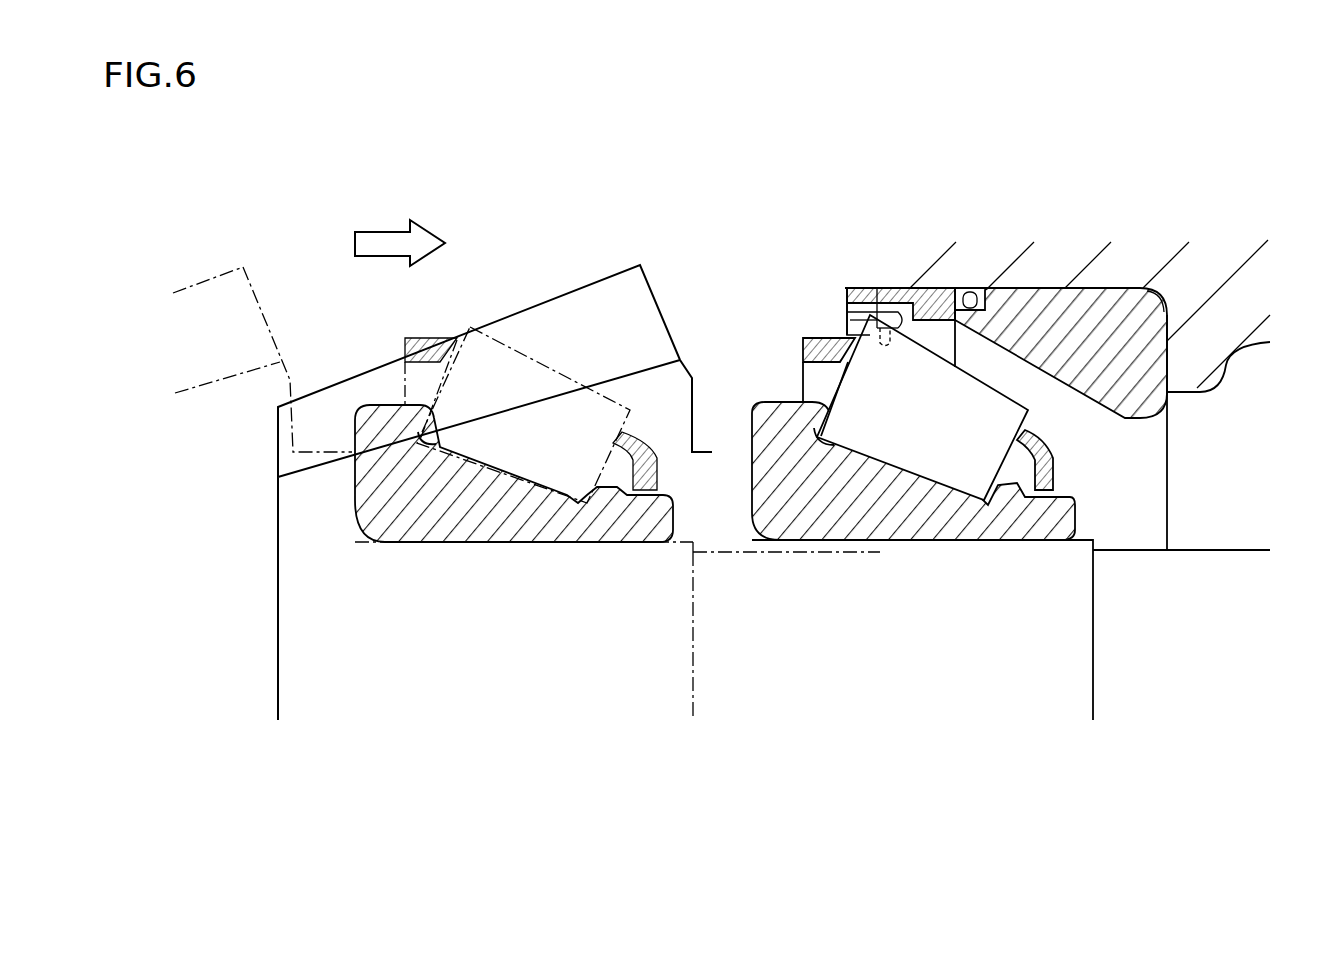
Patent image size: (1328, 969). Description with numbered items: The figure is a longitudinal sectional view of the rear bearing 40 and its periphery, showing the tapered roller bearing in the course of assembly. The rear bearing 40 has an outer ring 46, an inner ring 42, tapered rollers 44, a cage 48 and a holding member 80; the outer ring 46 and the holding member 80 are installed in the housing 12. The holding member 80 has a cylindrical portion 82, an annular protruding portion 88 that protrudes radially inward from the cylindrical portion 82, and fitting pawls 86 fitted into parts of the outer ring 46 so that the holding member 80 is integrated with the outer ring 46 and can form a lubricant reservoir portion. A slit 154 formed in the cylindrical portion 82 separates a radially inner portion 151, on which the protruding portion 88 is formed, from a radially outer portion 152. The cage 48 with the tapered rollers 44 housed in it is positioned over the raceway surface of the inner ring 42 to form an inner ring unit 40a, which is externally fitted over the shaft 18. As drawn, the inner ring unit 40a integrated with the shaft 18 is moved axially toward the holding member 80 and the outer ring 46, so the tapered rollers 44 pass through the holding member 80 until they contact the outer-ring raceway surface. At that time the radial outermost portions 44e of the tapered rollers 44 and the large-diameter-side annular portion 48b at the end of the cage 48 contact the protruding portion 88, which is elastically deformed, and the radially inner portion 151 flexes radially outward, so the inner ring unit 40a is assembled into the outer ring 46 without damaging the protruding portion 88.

The housing 12 is at (1208, 268).
The shaft 18 is at (573, 537).
The rear bearing 40 is at (1182, 406).
The inner ring unit 40a is at (427, 546).
The inner ring 42 is at (495, 520).
The tapered rollers 44 is at (533, 470).
The radial outermost portions 44e is at (470, 327).
The outer ring 46 is at (1043, 285).
The cage 48 is at (1045, 450).
The large-diameter-side annular portion 48b is at (405, 345).
The holding member 80 is at (892, 284).
The cylindrical portion 82 is at (926, 288).
The fitting pawls 86 is at (965, 288).
The annular protruding portion 88 is at (847, 331).
The radially inner portion 151 is at (865, 312).
The radially outer portion 152 is at (872, 292).
The slit 154 is at (863, 292).